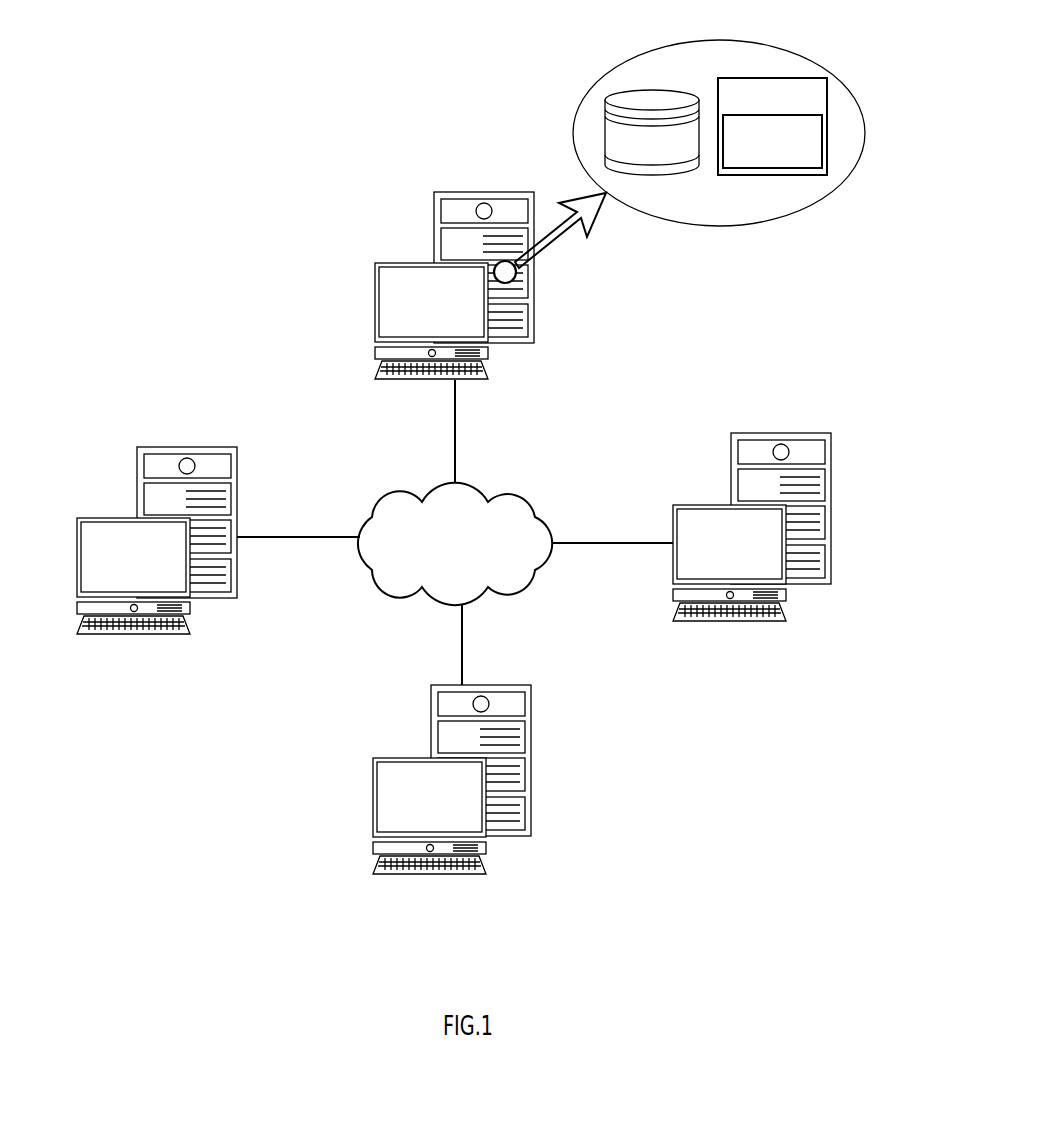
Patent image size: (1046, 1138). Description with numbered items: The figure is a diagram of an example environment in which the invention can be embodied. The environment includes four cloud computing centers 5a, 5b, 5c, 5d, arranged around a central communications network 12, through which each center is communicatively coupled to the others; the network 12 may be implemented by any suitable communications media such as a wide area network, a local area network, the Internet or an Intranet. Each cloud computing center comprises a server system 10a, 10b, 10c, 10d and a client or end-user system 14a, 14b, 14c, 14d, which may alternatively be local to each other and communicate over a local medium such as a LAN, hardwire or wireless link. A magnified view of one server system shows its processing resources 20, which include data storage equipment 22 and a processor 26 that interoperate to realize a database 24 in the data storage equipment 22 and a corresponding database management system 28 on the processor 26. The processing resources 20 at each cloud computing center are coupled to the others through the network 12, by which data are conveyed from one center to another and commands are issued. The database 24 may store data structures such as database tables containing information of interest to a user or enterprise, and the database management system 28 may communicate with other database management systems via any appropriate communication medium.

The cloud computing center 5a is at (425, 267).
The cloud computing center 5b is at (731, 506).
The cloud computing center 5c is at (445, 759).
The cloud computing center 5d is at (162, 548).
The server system 10a is at (483, 192).
The server system 10b is at (782, 433).
The server system 10c is at (502, 685).
The server system 10d is at (197, 447).
The client system 14a is at (375, 316).
The client system 14b is at (673, 530).
The client system 14c is at (373, 820).
The client system 14d is at (145, 634).
The communications network 12 is at (534, 503).
The processing resources 20 is at (780, 52).
The data storage equipment 22 is at (666, 75).
The database 24 is at (670, 157).
The processor 26 is at (777, 78).
The database management system 28 is at (790, 170).